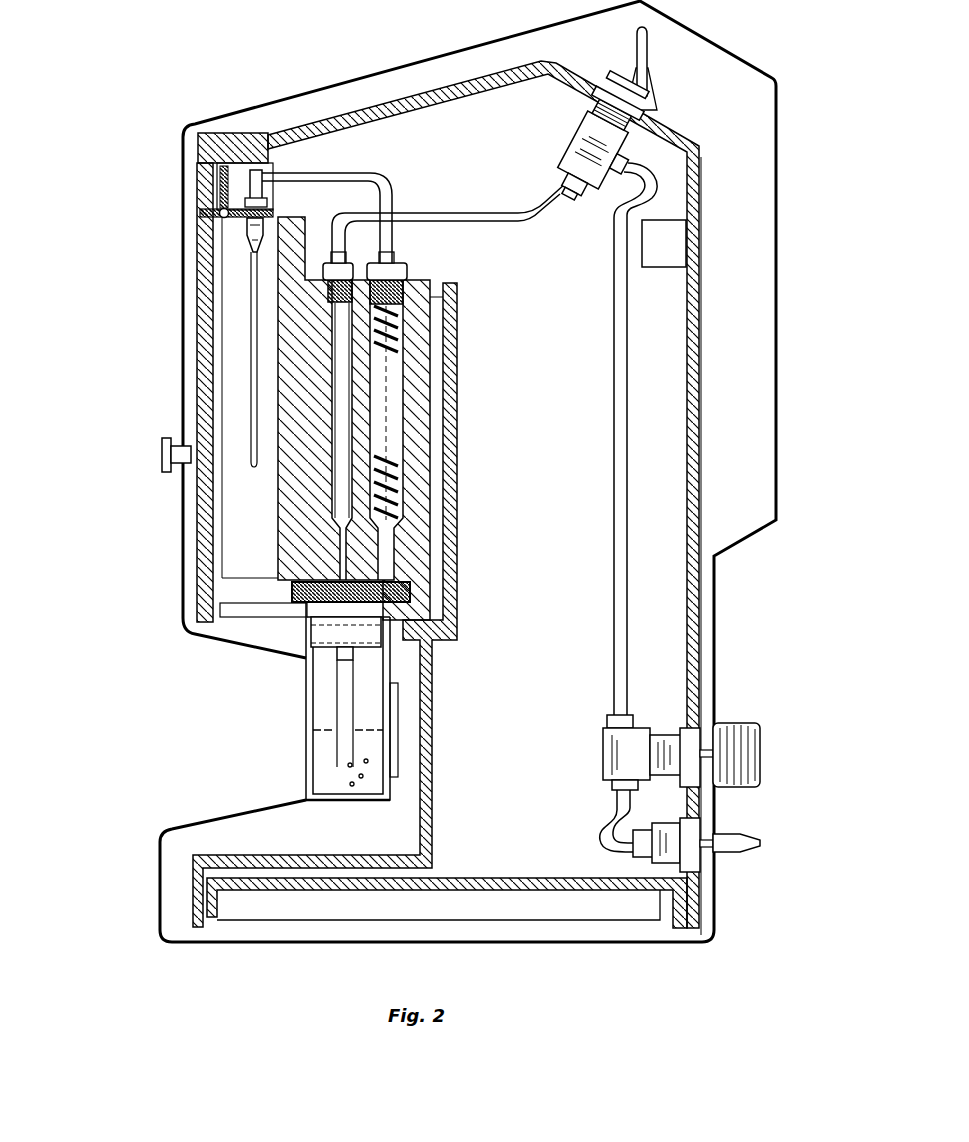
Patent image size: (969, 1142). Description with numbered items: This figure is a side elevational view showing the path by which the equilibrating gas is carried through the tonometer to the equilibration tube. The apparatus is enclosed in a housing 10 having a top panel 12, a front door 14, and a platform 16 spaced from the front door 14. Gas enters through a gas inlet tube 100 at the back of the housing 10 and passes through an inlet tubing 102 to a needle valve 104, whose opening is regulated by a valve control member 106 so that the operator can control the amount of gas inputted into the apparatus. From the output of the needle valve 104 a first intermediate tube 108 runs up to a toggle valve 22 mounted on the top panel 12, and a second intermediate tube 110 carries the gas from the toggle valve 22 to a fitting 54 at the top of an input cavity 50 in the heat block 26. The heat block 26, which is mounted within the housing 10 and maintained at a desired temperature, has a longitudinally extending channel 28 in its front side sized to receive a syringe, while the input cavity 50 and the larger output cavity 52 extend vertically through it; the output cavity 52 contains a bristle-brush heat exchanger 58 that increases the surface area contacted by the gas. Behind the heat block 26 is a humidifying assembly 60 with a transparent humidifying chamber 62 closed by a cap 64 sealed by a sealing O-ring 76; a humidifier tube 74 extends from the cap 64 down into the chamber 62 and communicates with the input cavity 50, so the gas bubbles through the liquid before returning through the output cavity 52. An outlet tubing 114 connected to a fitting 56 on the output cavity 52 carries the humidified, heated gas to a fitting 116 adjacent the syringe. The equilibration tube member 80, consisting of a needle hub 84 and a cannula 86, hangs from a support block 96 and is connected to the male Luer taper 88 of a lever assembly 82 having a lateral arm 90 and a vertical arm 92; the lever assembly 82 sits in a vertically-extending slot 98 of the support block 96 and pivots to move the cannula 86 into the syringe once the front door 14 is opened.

The housing 10 is at (297, 88).
The top panel 12 is at (447, 50).
The front door 14 is at (210, 329).
The platform 16 is at (190, 858).
The toggle valve 22 is at (647, 43).
The heat block 26 is at (440, 338).
The channel 28 is at (232, 518).
The input cavity 50 is at (340, 396).
The output cavity 52 is at (395, 418).
The fitting 54 is at (355, 262).
The fitting 56 is at (400, 272).
The heat exchanger 58 is at (402, 490).
The humidifying assembly 60 is at (296, 759).
The humidifying chamber 62 is at (327, 700).
The cap 64 is at (298, 602).
The humidifier tube 74 is at (339, 660).
The sealing O-ring 76 is at (310, 628).
The equilibration tube member 80 is at (192, 292).
The lever assembly 82 is at (212, 195).
The needle hub 84 is at (236, 268).
The cannula 86 is at (256, 347).
The male Luer taper 88 is at (256, 238).
The lateral arm 90 is at (219, 218).
The vertical arm 92 is at (222, 184).
The support block 96 is at (206, 143).
The slot 98 is at (230, 216).
The gas inlet tube 100 is at (740, 835).
The inlet tubing 102 is at (604, 843).
The needle valve 104 is at (617, 752).
The valve control member 106 is at (740, 740).
The first intermediate tube 108 is at (622, 630).
The second intermediate tube 110 is at (512, 224).
The outlet tubing 114 is at (358, 174).
The fitting 116 is at (268, 202).